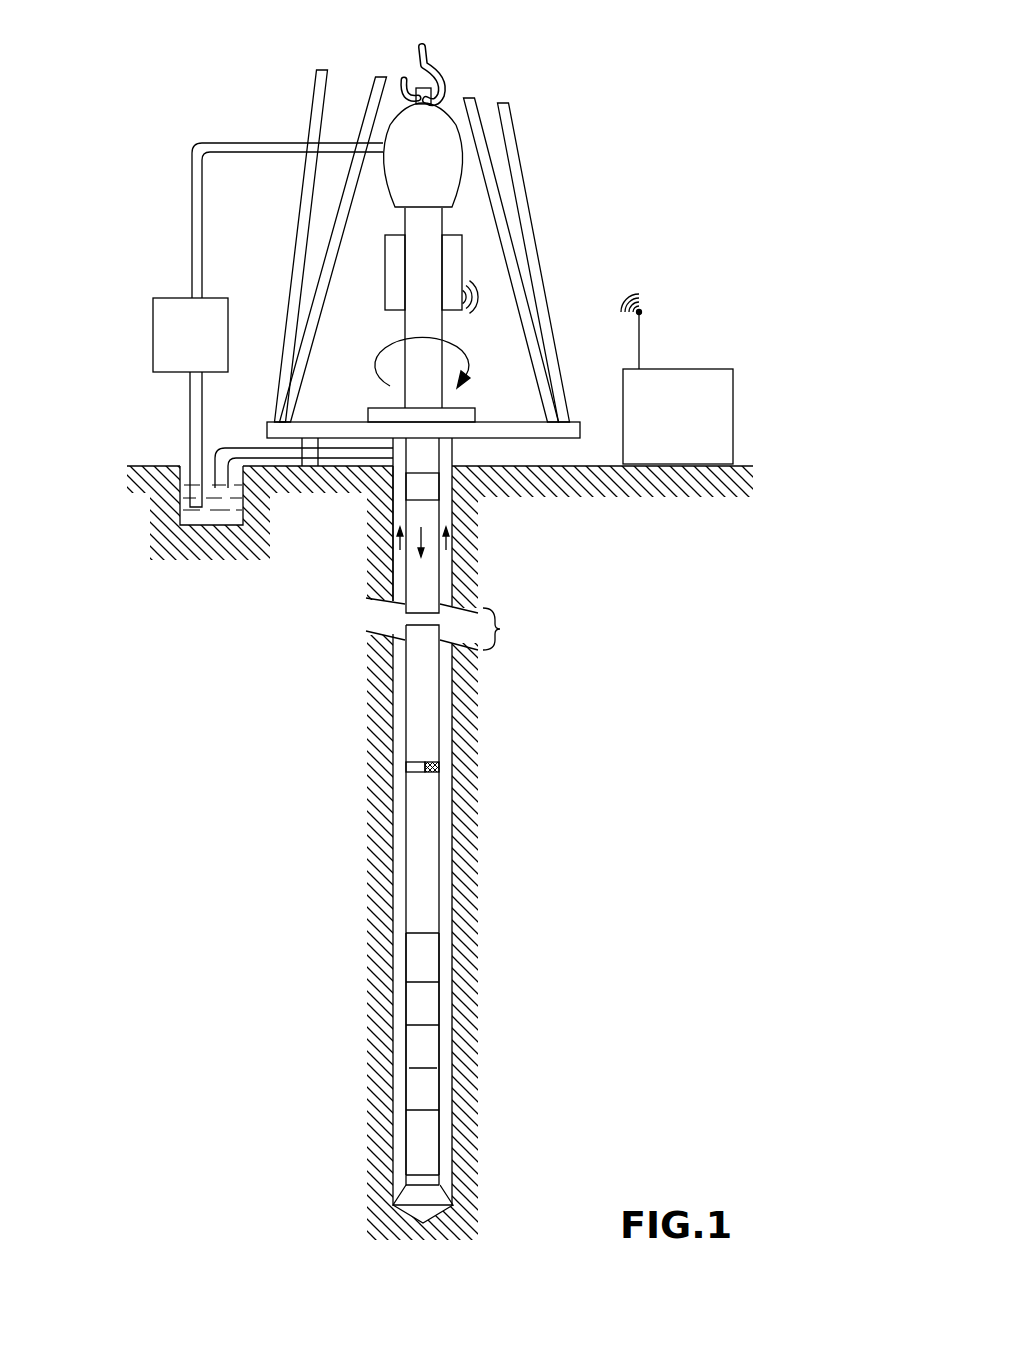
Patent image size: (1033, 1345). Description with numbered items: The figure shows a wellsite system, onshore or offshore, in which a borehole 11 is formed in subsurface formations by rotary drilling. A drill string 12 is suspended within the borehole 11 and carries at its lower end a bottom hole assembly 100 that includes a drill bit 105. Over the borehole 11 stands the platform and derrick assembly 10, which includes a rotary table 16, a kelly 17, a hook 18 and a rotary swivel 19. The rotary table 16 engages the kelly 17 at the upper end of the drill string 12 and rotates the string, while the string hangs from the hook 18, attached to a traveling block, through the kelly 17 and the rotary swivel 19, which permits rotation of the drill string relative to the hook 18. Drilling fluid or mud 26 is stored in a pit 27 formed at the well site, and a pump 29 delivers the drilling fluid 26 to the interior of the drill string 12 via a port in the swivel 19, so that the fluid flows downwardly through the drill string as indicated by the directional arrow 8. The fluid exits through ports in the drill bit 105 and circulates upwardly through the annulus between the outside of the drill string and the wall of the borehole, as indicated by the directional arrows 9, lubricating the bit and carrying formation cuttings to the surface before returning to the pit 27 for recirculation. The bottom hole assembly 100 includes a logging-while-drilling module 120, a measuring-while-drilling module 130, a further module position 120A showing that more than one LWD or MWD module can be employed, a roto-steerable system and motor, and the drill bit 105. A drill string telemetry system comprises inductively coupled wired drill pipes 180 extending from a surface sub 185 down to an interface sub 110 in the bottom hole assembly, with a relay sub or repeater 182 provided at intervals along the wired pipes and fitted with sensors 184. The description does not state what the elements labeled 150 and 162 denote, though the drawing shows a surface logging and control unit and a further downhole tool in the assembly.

The directional arrow 8 is at (418, 558).
The directional arrows 9 is at (398, 538).
The platform and derrick assembly 10 is at (552, 138).
The borehole 11 is at (457, 462).
The drill string 12 is at (413, 462).
The rotary table 16 is at (476, 407).
The kelly 17 is at (420, 323).
The hook 18 is at (417, 50).
The rotary swivel 19 is at (394, 182).
The drilling fluid 26 is at (215, 518).
The pit 27 is at (178, 458).
The pump 29 is at (230, 340).
The bottom hole assembly 100 is at (343, 907).
The drill bit 105 is at (427, 1200).
The interface sub 110 is at (423, 965).
The logging-while-drilling module 120 is at (425, 1008).
The additional LWD or MWD module 120A is at (425, 1093).
The measuring-while-drilling module 130 is at (425, 1057).
The steering / downhole tool 150 is at (423, 1138).
The logging and control unit 162 is at (695, 368).
The wired drill pipes 180 is at (425, 720).
The relay sub or repeater 182 is at (418, 766).
The sensors 184 is at (445, 767).
The surface sub 185 is at (423, 487).